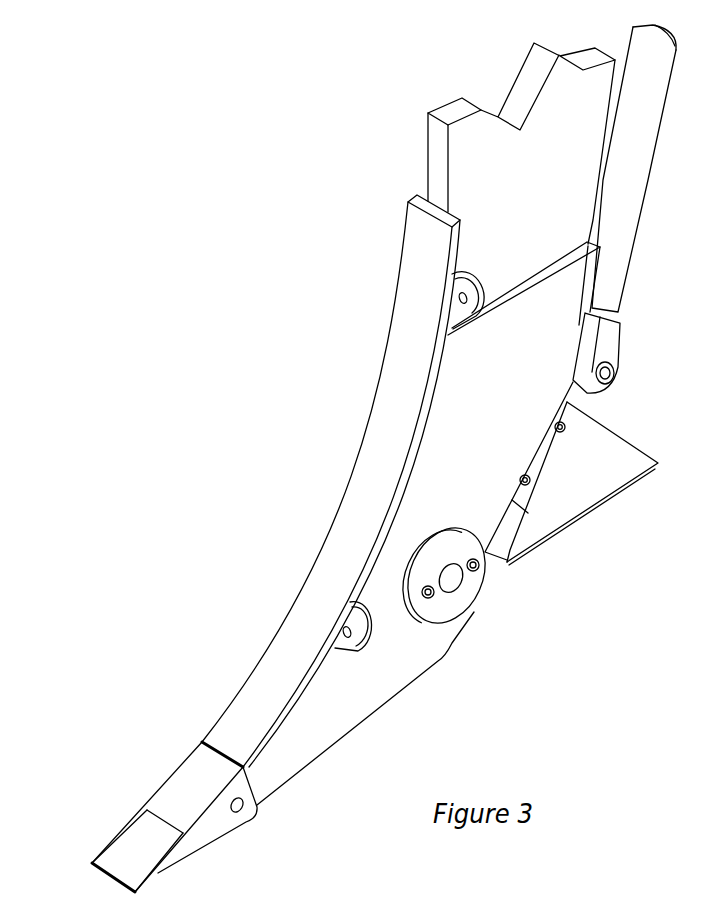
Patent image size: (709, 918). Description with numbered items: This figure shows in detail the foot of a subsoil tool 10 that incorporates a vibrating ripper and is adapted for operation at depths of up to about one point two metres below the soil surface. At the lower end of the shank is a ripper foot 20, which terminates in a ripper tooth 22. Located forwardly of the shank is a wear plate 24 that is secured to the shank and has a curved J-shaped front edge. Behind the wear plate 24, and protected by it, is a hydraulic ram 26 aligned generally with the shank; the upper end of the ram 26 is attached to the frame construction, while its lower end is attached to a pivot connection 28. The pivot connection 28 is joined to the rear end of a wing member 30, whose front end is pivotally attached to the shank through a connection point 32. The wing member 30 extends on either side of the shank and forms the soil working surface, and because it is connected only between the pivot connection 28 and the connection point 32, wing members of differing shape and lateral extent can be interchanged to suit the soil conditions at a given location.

The subsoil tool 10 is at (284, 491).
The ripper foot 20 is at (175, 788).
The ripper tooth 22 is at (125, 847).
The wear plate 24 is at (365, 452).
The hydraulic ram 26 is at (625, 212).
The pivot connection 28 is at (610, 378).
The wing member 30 is at (628, 463).
The connection point 32 is at (455, 578).